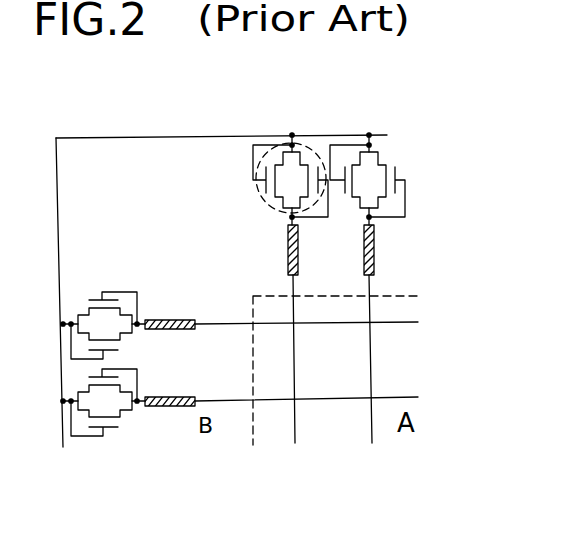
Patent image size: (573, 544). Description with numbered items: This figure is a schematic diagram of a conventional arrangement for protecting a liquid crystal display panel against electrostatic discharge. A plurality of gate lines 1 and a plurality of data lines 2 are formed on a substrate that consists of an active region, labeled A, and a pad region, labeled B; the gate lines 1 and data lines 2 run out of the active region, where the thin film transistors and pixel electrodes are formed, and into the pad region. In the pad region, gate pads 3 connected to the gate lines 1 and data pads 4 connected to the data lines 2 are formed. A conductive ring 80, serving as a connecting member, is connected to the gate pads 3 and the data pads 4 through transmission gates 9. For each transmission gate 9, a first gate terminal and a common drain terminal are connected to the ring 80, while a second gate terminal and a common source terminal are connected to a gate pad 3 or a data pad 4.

The conductive ring 80 is at (333, 135).
The transmission gate 9 is at (257, 197).
The data pad 4 is at (365, 262).
The gate pad 3 is at (158, 329).
The gate line 1 is at (403, 322).
The data line 2 is at (372, 412).